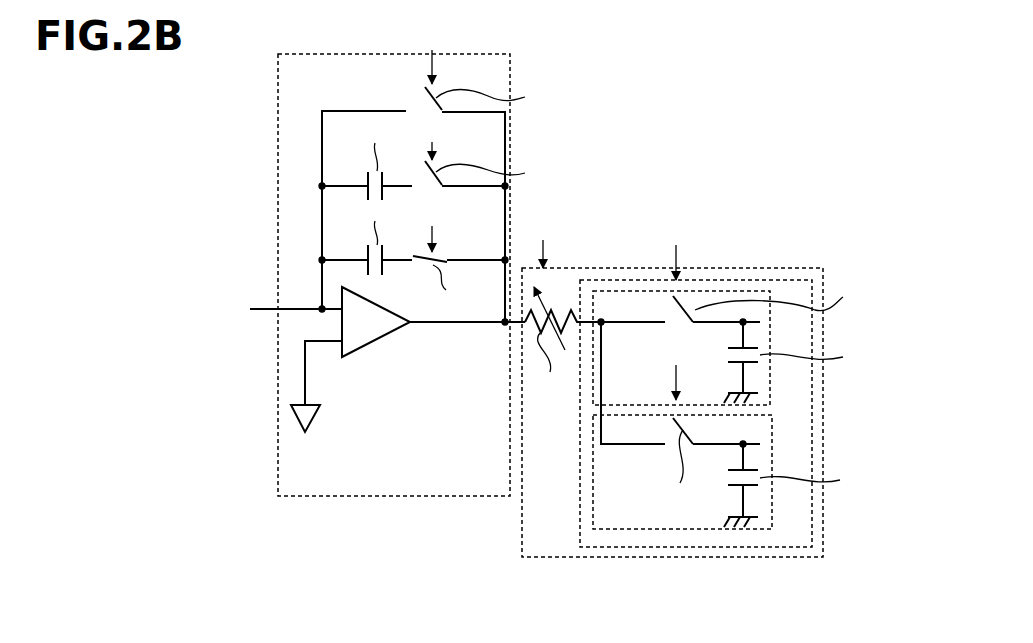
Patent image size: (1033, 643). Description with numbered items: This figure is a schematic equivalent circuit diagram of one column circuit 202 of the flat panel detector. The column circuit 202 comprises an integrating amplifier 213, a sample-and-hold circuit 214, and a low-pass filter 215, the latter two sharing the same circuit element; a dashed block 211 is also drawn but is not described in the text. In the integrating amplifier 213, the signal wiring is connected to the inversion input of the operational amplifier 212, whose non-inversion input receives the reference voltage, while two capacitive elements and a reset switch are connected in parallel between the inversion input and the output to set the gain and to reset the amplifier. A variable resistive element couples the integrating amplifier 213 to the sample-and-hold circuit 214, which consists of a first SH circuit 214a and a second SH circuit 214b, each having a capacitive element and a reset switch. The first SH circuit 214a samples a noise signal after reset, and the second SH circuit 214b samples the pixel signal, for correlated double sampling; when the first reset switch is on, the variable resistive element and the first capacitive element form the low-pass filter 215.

The column circuit 202 is at (240, 101).
The integrating amplifier 211 is at (511, 58).
The operational amplifier 212 is at (372, 346).
The integrating amplifier 213 is at (521, 527).
The sample-and-hold circuit 214 is at (812, 402).
The first SH circuit 214a is at (748, 290).
The second SH circuit 214b is at (772, 515).
The low-pass filter 215 is at (812, 280).